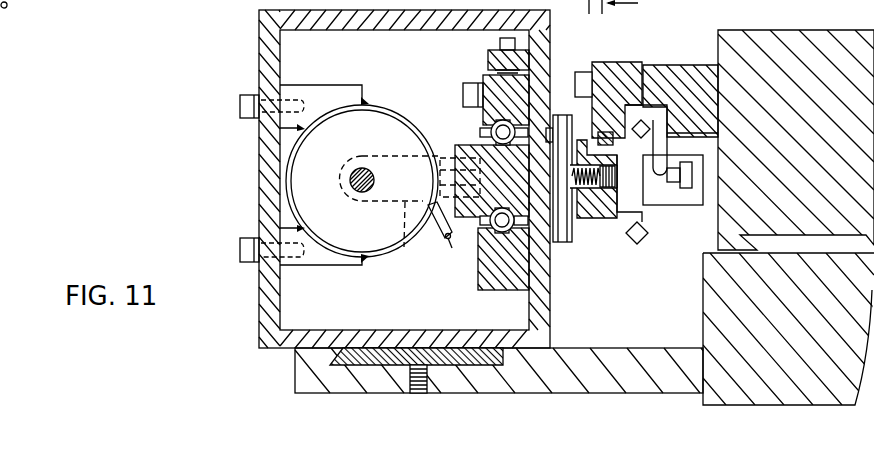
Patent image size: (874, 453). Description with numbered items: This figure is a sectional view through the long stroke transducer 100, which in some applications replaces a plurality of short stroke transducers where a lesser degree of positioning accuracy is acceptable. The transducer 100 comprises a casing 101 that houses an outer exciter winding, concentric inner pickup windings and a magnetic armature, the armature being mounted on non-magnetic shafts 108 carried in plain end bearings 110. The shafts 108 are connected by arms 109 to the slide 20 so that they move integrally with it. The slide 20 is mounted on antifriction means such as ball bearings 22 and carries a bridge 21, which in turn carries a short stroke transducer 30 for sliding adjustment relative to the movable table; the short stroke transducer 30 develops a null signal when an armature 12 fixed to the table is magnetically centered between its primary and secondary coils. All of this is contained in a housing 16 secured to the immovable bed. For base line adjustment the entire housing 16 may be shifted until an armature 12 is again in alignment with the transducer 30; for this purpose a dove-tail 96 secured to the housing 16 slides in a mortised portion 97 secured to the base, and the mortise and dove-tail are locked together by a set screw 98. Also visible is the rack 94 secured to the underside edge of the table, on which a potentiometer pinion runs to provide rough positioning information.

The armature 12 is at (637, 112).
The housing 16 is at (255, 305).
The slide 20 is at (473, 216).
The bridge 21 is at (585, 214).
The ball bearings 22 is at (493, 125).
The short stroke transducer 30 is at (641, 213).
The rack 94 is at (607, 130).
The dove-tail 96 is at (365, 355).
The mortised portion 97 is at (296, 369).
The set screw 98 is at (428, 382).
The long stroke transducer 100 is at (284, 190).
The casing 101 is at (415, 118).
The non-magnetic shafts 108 is at (368, 167).
The arms 109 is at (422, 241).
The plain end bearings 110 is at (380, 120).